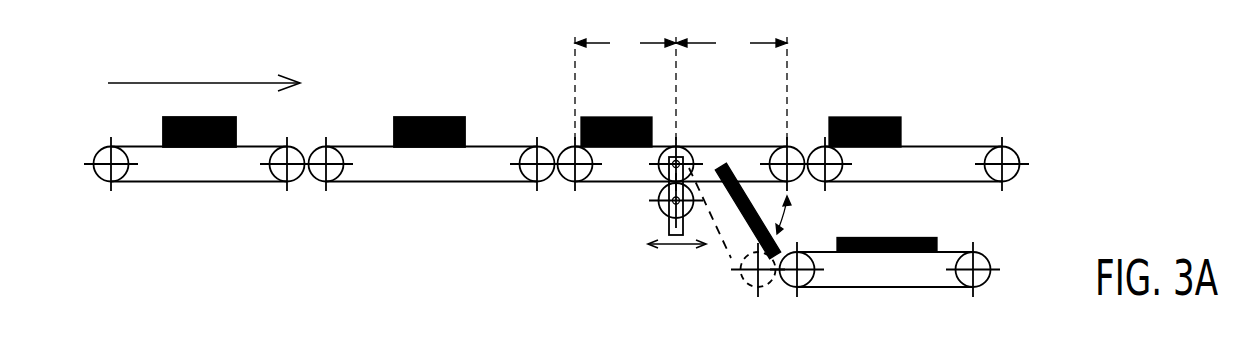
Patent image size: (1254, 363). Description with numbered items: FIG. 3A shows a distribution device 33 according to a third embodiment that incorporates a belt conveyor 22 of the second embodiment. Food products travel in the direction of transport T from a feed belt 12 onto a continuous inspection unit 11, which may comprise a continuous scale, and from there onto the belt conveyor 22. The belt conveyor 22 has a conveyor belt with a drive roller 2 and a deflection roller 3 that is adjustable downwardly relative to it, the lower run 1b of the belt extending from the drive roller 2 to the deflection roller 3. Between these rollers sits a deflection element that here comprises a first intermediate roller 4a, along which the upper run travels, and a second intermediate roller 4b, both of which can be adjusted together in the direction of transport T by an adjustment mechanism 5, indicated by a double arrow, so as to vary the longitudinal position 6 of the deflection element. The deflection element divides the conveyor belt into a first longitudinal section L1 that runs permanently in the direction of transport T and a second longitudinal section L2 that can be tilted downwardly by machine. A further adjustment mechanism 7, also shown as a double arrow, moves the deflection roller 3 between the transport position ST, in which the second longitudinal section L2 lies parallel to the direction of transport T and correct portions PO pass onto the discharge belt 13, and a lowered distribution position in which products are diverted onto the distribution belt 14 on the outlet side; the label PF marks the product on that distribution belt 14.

The lower run 1b is at (592, 182).
The drive roller 2 is at (563, 153).
The deflection roller 3 is at (798, 152).
The first intermediate roller 4a is at (688, 151).
The second intermediate roller 4b is at (660, 207).
The adjustment mechanism 5 is at (677, 250).
The longitudinal position 6 is at (670, 126).
The adjustment mechanism 7 is at (788, 216).
The continuous inspection unit 11 is at (427, 200).
The feed belt 12 is at (195, 200).
The discharge belt 13 is at (950, 126).
The distribution belt 14 is at (880, 306).
The belt conveyor 22 is at (643, 236).
The distribution device 33 is at (1008, 75).
The direction of transport T is at (204, 67).
The transport position ST is at (762, 155).
The correct portions PO is at (842, 118).
The product fault PF is at (863, 237).
The first longitudinal section L1 is at (625, 83).
The second longitudinal section L2 is at (731, 83).